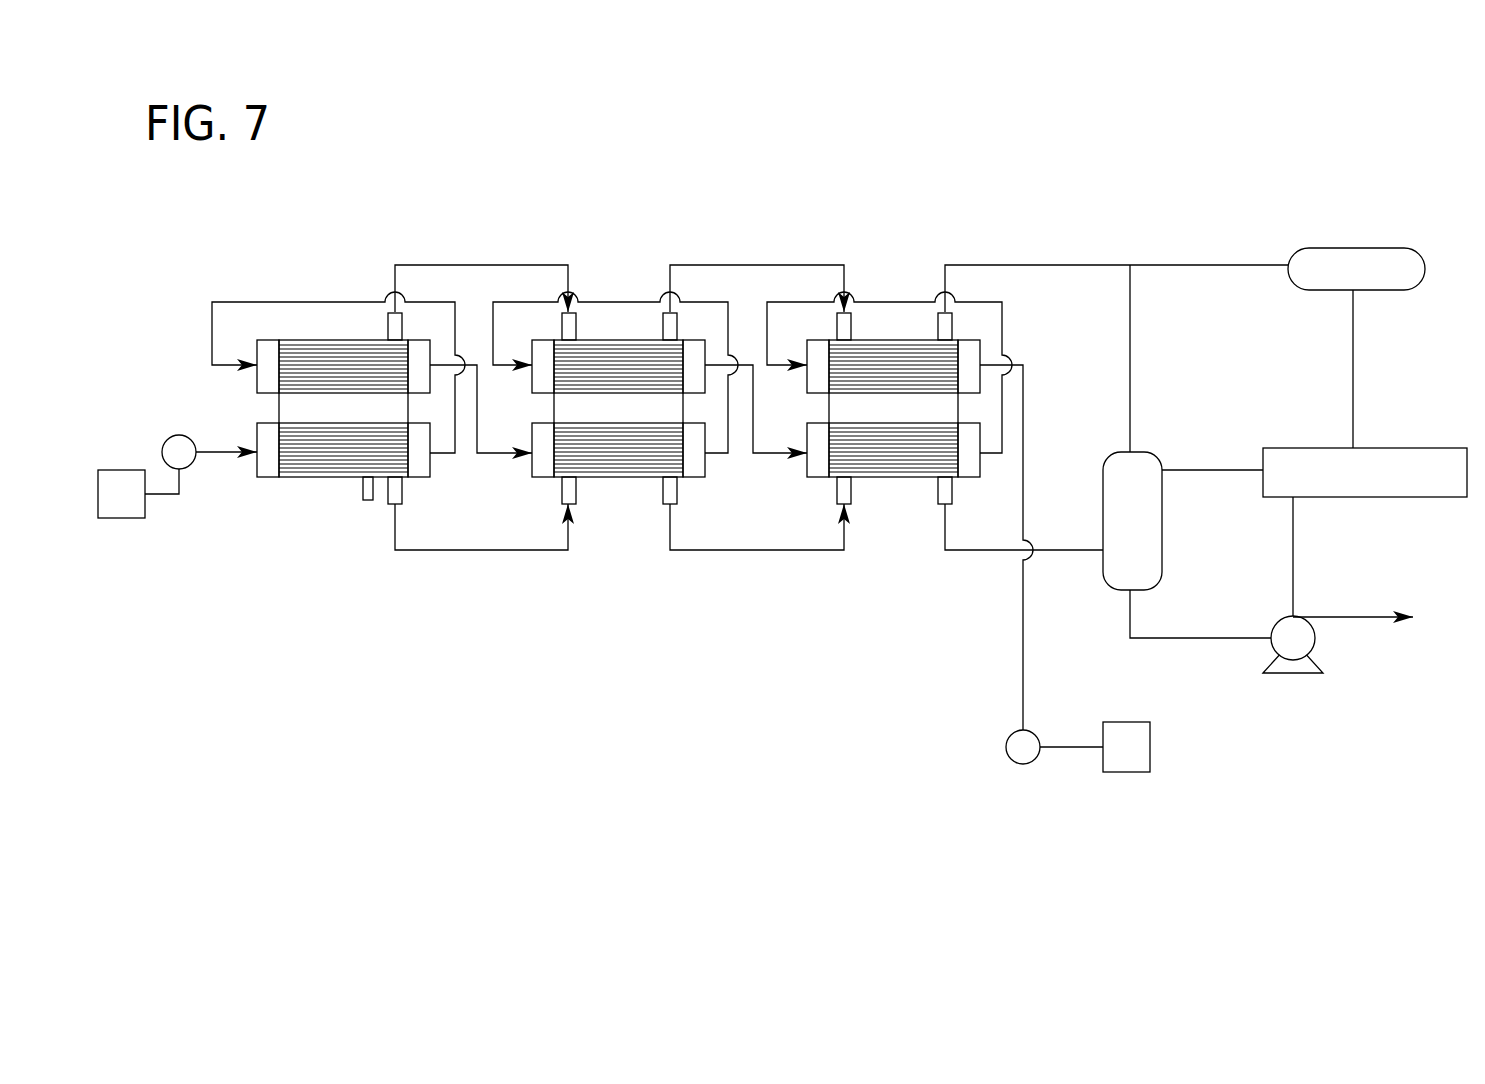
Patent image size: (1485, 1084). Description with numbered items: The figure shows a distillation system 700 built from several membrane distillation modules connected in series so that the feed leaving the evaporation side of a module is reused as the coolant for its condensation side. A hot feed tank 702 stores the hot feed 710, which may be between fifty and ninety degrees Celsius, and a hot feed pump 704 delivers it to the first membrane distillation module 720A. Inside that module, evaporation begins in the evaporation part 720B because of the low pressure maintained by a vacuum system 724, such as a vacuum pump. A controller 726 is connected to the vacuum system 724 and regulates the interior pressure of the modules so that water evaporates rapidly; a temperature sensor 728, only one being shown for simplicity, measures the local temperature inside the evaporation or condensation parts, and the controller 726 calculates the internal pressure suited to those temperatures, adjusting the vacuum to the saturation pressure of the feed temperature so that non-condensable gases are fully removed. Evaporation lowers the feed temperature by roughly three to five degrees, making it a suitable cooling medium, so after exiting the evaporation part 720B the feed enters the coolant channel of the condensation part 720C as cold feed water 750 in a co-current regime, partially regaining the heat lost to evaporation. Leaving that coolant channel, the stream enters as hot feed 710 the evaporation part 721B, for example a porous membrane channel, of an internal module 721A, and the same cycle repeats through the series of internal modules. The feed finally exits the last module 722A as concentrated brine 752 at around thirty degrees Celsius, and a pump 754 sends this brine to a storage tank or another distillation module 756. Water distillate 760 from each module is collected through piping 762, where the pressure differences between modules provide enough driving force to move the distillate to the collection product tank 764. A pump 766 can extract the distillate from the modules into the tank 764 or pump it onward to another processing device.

The distillation system 700 is at (912, 173).
The hot feed tank 702 is at (121, 519).
The hot feed pump 704 is at (167, 440).
The hot feed 710 is at (236, 448).
The first membrane distillation module 720A is at (371, 461).
The evaporation part 720B is at (303, 427).
The condensation part 720C is at (313, 358).
The internal module 721A is at (618, 461).
The evaporation part of internal module 721B is at (575, 427).
The last module 722A is at (888, 483).
The vacuum system 724 is at (1337, 292).
The controller 726 is at (1397, 448).
The temperature sensor 728 is at (369, 478).
The cold feed water 750 is at (443, 362).
The concentrated brine 752 is at (1025, 390).
The pump 754 is at (1035, 733).
The storage tank or another distillation module 756 is at (1150, 752).
The water distillate 760 is at (400, 488).
The piping 762 is at (712, 553).
The collection product tank 764 is at (1162, 530).
The pump 766 is at (1292, 674).